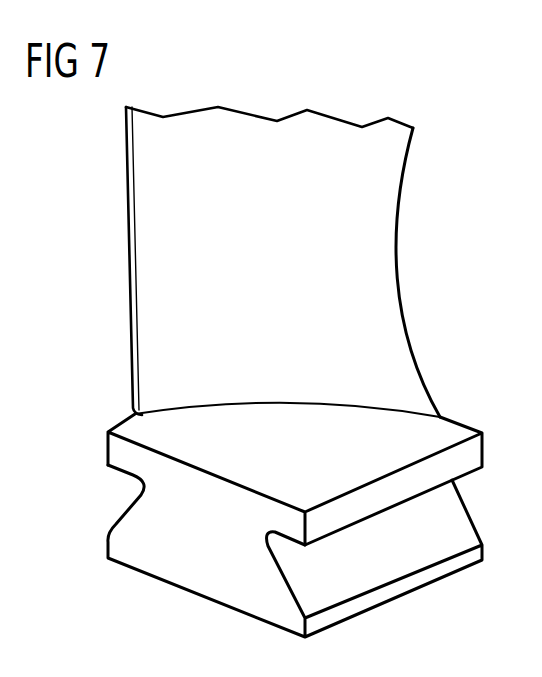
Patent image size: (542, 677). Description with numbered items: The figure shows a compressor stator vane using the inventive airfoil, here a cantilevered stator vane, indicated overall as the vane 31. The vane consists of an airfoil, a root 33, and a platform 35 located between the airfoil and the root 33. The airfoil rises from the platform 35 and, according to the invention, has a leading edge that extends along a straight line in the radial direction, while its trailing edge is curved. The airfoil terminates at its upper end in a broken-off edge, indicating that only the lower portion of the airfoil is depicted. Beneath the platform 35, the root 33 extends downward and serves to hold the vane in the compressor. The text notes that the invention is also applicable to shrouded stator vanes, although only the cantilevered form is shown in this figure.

The rotor blade 31 is at (88, 210).
The platform 35 is at (117, 451).
The root 33 is at (117, 550).